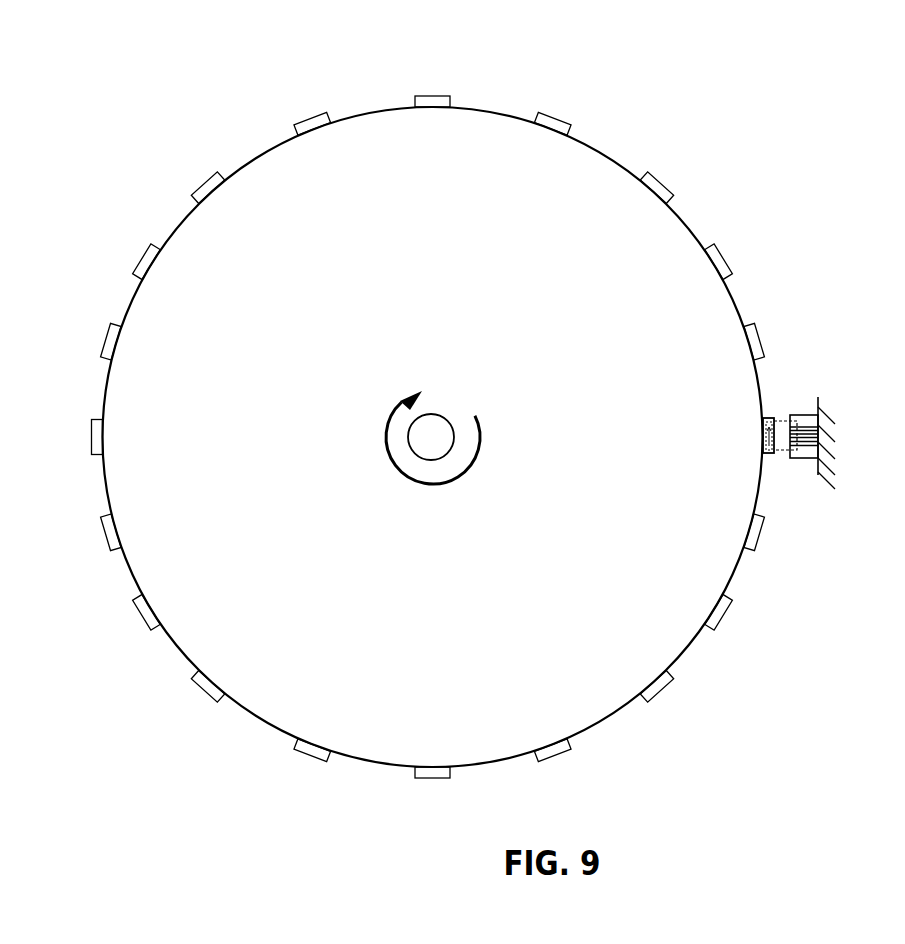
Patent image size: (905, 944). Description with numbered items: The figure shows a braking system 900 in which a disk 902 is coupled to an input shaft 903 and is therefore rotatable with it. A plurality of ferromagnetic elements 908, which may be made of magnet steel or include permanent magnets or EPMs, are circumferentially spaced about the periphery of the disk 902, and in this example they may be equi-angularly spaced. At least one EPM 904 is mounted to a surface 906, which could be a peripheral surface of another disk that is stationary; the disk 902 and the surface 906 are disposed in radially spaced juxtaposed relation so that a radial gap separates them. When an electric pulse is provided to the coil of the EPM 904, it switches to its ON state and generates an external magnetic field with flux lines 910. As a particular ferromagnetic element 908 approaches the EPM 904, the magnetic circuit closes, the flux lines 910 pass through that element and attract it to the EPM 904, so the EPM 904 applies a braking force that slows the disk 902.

The braking system 900 is at (195, 114).
The disk 902 is at (493, 110).
The input shaft 903 is at (444, 418).
The EPM 904 is at (798, 415).
The surface 906 is at (820, 474).
The ferromagnetic element 908 is at (763, 420).
The flux lines 910 is at (785, 420).